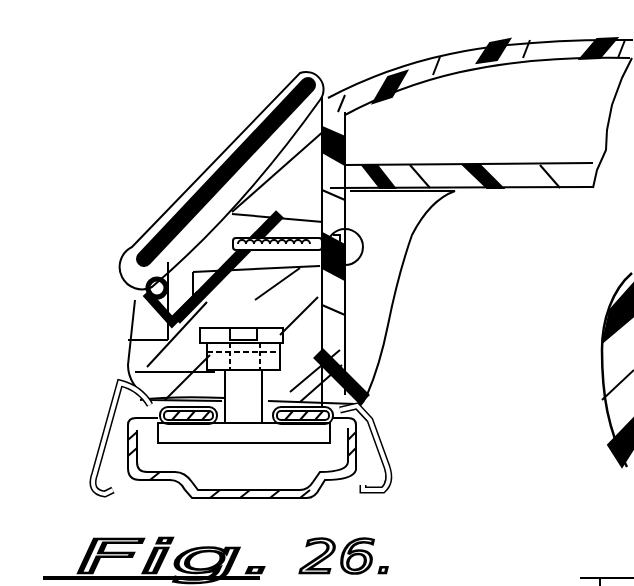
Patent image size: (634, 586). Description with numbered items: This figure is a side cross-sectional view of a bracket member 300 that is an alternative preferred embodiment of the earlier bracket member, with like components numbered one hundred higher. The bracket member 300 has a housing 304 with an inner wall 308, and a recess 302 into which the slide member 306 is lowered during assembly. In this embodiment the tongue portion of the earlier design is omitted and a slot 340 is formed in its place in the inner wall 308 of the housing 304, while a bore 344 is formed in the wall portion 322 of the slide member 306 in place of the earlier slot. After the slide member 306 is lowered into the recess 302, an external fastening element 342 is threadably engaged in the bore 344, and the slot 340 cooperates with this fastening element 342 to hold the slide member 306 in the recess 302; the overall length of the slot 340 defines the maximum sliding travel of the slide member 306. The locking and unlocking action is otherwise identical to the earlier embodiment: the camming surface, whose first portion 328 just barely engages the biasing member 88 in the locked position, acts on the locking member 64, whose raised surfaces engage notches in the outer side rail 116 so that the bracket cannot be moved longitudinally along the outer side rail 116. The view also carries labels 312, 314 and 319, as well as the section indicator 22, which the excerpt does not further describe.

The bracket member 300 is at (140, 107).
The recess 302 is at (176, 356).
The housing 304 is at (452, 58).
The slide member 306 is at (148, 207).
The inner wall 308 is at (326, 158).
The gasket 312 is at (228, 392).
The seal 314 is at (232, 397).
The vertical web 319 is at (320, 77).
The wall portion 322 is at (312, 258).
The first portion of the camming surface 328 is at (212, 328).
The slot 340 is at (336, 240).
The external fastening element 342 is at (384, 316).
The bore 344 is at (295, 240).
The biasing member 88 is at (284, 352).
The locking member 64 is at (228, 448).
The outer side rail 116 is at (78, 469).
The section line 22- 22 is at (240, 244).